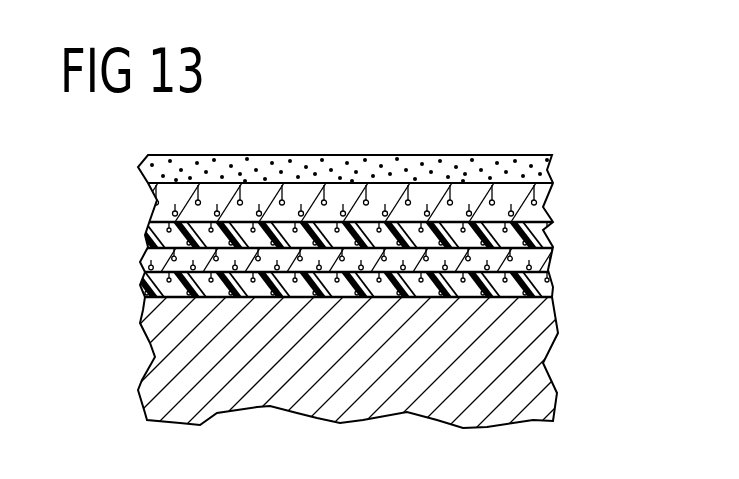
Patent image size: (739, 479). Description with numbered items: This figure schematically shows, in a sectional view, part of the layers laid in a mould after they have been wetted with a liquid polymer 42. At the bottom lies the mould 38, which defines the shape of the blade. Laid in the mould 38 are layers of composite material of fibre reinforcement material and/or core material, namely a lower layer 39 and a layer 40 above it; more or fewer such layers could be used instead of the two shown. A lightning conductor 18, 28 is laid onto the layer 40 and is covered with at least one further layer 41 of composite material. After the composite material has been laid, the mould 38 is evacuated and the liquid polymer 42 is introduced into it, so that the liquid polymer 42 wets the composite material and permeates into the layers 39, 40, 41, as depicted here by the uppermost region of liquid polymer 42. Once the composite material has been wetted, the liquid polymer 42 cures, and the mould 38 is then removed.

The liquid polymer 42 is at (553, 160).
The layer of composite material 41 is at (553, 194).
The lightning conductor 18 is at (373, 227).
The lightning conductor 28 is at (553, 245).
The layer of composite material 40 is at (553, 258).
The layer of composite material 39 is at (553, 287).
The mould 38 is at (547, 343).